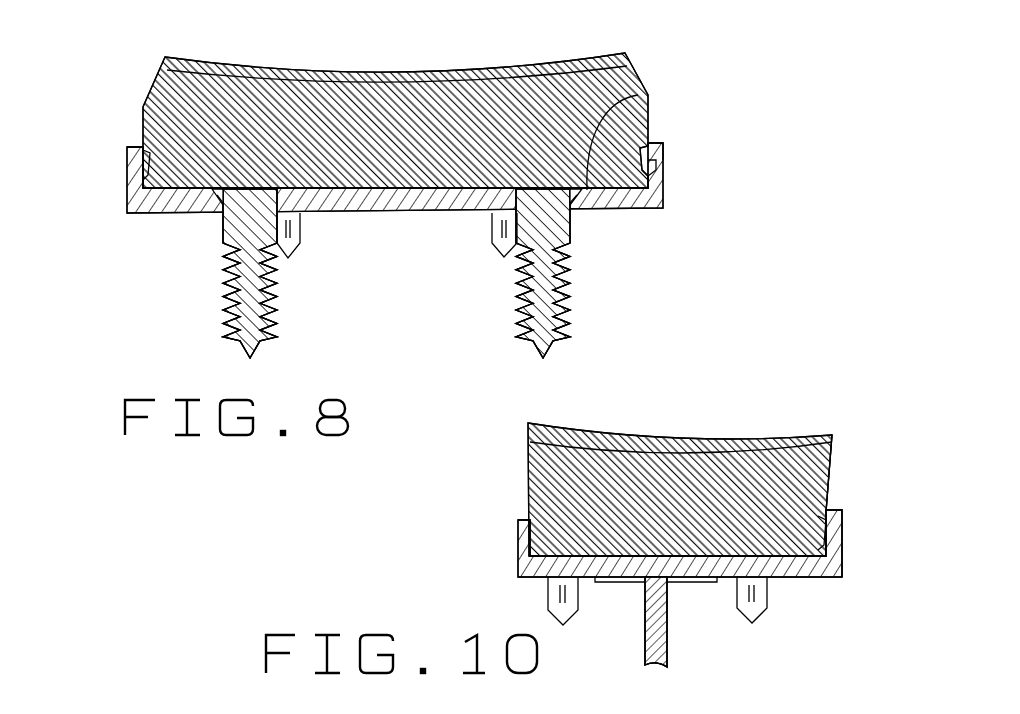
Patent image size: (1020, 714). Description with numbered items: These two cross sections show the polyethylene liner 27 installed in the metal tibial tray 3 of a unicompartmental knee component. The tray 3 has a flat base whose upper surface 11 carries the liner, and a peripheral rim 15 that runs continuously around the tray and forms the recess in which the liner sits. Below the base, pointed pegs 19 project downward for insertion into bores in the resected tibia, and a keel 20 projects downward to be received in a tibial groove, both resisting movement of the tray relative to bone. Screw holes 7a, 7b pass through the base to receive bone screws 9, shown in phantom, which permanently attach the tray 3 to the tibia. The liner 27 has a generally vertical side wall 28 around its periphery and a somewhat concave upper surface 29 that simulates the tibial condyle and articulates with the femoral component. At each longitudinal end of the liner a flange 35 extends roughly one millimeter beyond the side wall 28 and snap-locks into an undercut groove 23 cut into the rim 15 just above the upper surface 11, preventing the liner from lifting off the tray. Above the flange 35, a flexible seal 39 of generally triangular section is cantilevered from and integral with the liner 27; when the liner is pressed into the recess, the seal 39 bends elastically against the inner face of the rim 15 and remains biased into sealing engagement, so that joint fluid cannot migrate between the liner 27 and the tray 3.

In FIG. 8, the tibial tray 3 is at (118, 208).
In FIG. 10, the tibial tray 3 is at (818, 588).
In FIG. 8, the screw hole 7a is at (217, 213).
In FIG. 8, the screw hole 7b is at (585, 195).
In FIG. 8, the bone screw 9 is at (237, 340).
In FIG. 8, the upper surface 11 is at (385, 177).
In FIG. 10, the upper surface 11 is at (537, 488).
In FIG. 8, the peripheral rim 15 is at (125, 148).
In FIG. 10, the peripheral rim 15 is at (850, 548).
In FIG. 8, the peg 19 is at (302, 250).
In FIG. 10, the peg 19 is at (580, 600).
In FIG. 10, the keel 20 is at (667, 642).
In FIG. 8, the undercut groove 23 is at (653, 177).
In FIG. 8, the liner 27 is at (147, 72).
In FIG. 10, the liner 27 is at (827, 418).
In FIG. 10, the side wall 28 is at (832, 470).
In FIG. 8, the upper surface 29 is at (330, 80).
In FIG. 10, the upper surface 29 is at (618, 450).
In FIG. 8, the flange 35 is at (660, 187).
In FIG. 8, the flexible seal 39 is at (701, 140).
In FIG. 10, the flexible seal 39 is at (525, 517).